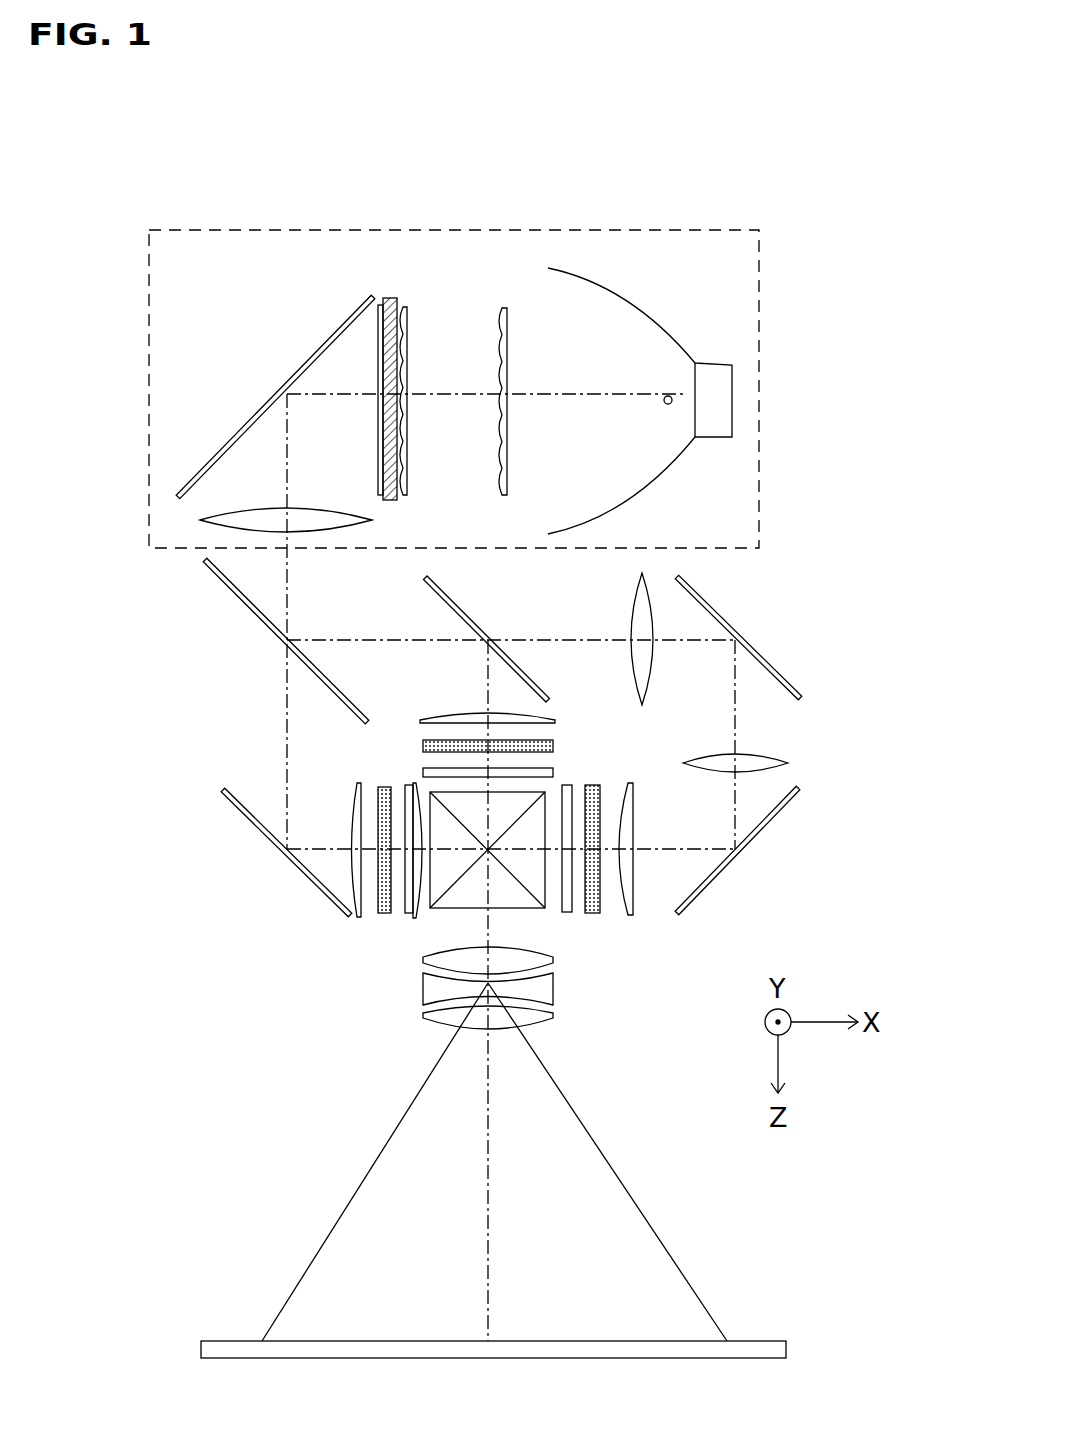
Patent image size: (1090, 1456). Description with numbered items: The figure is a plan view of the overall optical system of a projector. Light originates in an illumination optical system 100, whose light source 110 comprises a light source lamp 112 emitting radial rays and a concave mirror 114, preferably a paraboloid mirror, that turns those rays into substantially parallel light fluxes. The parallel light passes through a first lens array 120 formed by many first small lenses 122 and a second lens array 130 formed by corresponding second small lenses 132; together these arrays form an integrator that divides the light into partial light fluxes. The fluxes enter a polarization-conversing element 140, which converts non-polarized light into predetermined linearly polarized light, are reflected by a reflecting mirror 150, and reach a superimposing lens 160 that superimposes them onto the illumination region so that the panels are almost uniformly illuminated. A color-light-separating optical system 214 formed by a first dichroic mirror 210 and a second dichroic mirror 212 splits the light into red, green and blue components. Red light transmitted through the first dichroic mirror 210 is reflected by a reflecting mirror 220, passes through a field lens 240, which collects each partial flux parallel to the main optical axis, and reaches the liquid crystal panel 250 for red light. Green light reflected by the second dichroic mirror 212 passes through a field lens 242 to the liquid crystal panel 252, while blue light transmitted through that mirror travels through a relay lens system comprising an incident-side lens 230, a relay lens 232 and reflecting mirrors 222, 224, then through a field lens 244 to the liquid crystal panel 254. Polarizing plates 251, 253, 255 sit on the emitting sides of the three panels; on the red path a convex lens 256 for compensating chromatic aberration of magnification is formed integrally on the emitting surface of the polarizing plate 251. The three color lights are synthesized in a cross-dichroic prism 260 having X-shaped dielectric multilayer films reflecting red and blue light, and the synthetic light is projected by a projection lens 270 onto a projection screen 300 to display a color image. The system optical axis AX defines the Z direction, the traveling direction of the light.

The illumination optical system 100 is at (652, 228).
The light source 110 is at (641, 388).
The light source lamp 112 is at (663, 406).
The concave mirror 114 is at (607, 297).
The first lens array 120 is at (487, 366).
The first small lenses 122 is at (498, 338).
The second lens array 130 is at (438, 363).
The second small lenses 132 is at (407, 320).
The polarization-conversing element 140 is at (388, 298).
The reflecting mirror 150 is at (320, 343).
The superimposing lens 160 is at (322, 507).
The first dichroic mirror 210 is at (235, 598).
The second dichroic mirror 212 is at (433, 598).
The color-light-separating optical system 214 is at (287, 700).
The reflecting mirror 220 is at (250, 823).
The reflecting mirror 222 is at (775, 670).
The reflecting mirror 224 is at (787, 807).
The incident-side lens 230 is at (630, 612).
The relay lens 232 is at (785, 757).
The field lens 240 is at (353, 800).
The field lens 242 is at (443, 715).
The field lens 244 is at (633, 827).
The liquid crystal panel 250 is at (383, 787).
The polarizing plate 251 is at (407, 913).
The liquid crystal panel 252 is at (553, 743).
The polarizing plate 253 is at (553, 770).
The liquid crystal panel 254 is at (600, 785).
The polarizing plate 255 is at (568, 913).
The convex lens for compensating chromatic aberration of magnification 256 is at (418, 918).
The cross-dichroic prism 260 is at (535, 912).
The projection lens 270 is at (407, 947).
The projection screen 300 is at (226, 1340).
The system optical axis AX is at (490, 925).